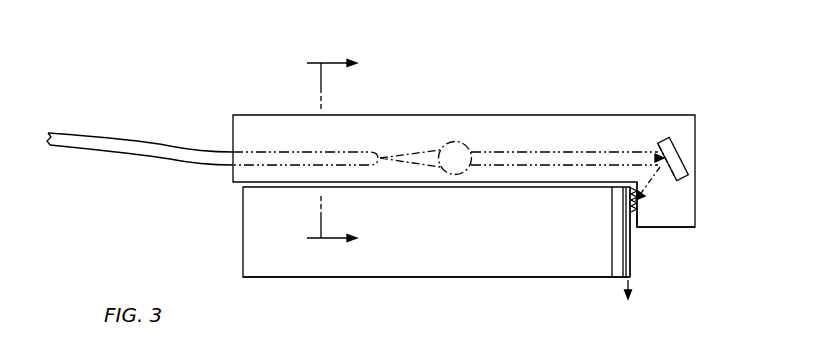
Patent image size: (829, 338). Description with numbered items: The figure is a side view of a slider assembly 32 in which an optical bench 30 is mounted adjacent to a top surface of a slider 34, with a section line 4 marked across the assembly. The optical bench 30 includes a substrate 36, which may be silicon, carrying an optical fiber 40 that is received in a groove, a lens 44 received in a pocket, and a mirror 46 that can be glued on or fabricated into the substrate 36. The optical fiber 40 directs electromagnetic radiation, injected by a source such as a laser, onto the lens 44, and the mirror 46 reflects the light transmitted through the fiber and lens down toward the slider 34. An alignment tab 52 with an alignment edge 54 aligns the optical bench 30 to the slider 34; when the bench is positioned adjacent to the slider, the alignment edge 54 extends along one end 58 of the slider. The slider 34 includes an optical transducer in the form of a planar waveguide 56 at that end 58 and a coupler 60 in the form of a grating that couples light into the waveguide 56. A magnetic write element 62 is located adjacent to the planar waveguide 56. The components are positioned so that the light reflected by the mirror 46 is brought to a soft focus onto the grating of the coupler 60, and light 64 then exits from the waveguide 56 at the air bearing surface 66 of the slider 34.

The optical bench 30 is at (710, 113).
The slider assembly 32 is at (212, 238).
The slider 34 is at (490, 268).
The substrate 36 is at (245, 132).
The optical fiber 40 is at (145, 158).
The lens 44 is at (460, 144).
The mirror 46 is at (676, 150).
The alignment tab 52 is at (683, 190).
The alignment edge 54 is at (640, 218).
The planar waveguide 56 is at (630, 267).
The end of the slider 58 is at (660, 257).
The coupler 60 is at (637, 207).
The magnetic write element 62 is at (613, 258).
The light 64 is at (632, 288).
The air bearing surface 66 is at (401, 279).
The section line 4- 4 is at (336, 154).